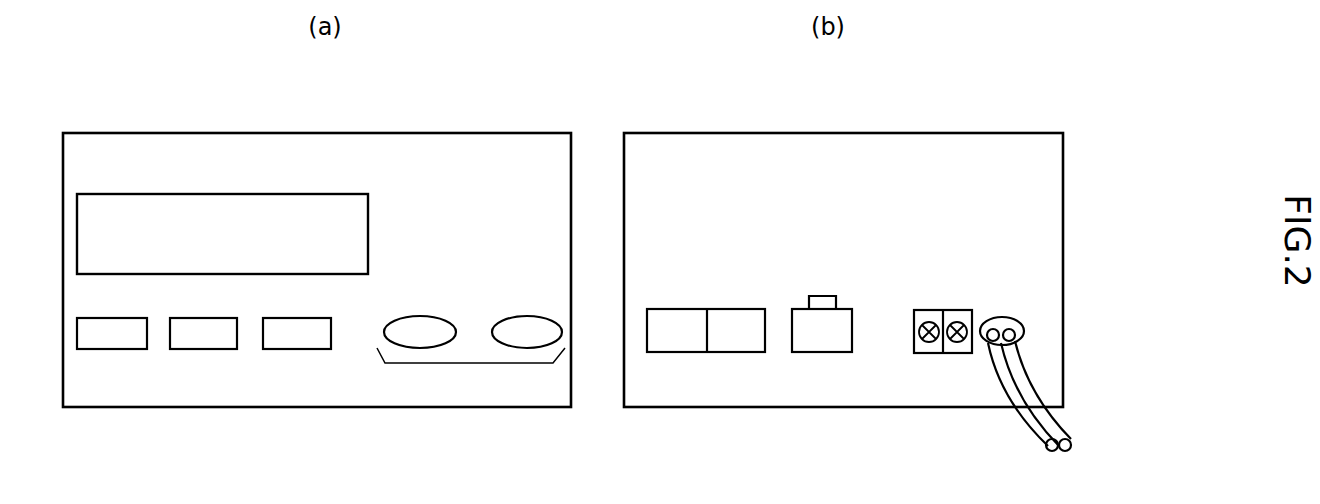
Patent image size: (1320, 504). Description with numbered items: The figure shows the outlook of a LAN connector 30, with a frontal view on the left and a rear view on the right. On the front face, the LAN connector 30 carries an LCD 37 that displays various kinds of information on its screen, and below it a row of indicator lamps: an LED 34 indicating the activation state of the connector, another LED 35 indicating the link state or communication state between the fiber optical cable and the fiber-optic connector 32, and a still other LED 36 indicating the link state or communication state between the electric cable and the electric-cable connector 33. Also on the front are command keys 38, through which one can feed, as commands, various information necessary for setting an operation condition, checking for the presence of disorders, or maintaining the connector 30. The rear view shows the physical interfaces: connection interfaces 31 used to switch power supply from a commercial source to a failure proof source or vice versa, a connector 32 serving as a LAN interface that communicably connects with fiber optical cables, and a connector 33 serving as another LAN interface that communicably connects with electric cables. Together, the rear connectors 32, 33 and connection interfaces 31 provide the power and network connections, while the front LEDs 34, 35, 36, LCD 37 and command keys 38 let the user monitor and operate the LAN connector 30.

The LAN connector 30 is at (432, 131).
The connection interfaces 31 is at (960, 309).
The connector 32 is at (816, 353).
The connector 33 is at (684, 353).
The LED 34 is at (110, 350).
The LED 35 is at (203, 350).
The LED 36 is at (294, 350).
The LCD 37 is at (181, 194).
The command keys 38 is at (493, 366).